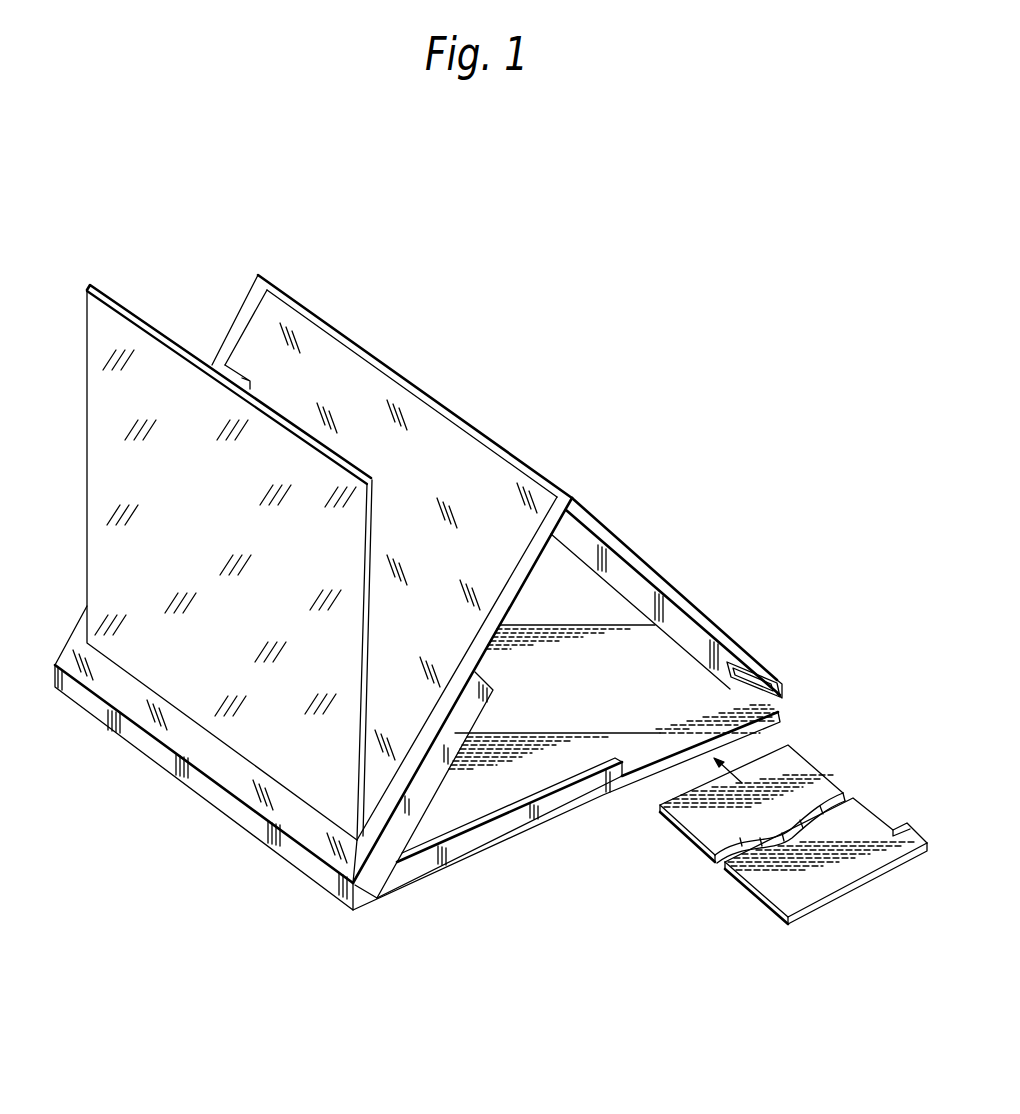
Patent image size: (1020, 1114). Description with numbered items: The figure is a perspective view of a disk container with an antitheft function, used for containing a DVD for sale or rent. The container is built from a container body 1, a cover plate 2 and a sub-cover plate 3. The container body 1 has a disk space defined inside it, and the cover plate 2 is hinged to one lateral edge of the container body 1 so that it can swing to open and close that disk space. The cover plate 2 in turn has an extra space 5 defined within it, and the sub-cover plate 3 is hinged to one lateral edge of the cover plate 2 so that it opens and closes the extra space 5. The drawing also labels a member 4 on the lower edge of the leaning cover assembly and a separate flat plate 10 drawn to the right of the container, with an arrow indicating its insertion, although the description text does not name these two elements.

The container body 1 is at (497, 848).
The cover plate 2 is at (397, 372).
The sub-cover plate 3 is at (140, 316).
The bottom frame member 4 is at (320, 876).
The extra space 5 is at (317, 357).
The insert sheet 10 is at (732, 867).